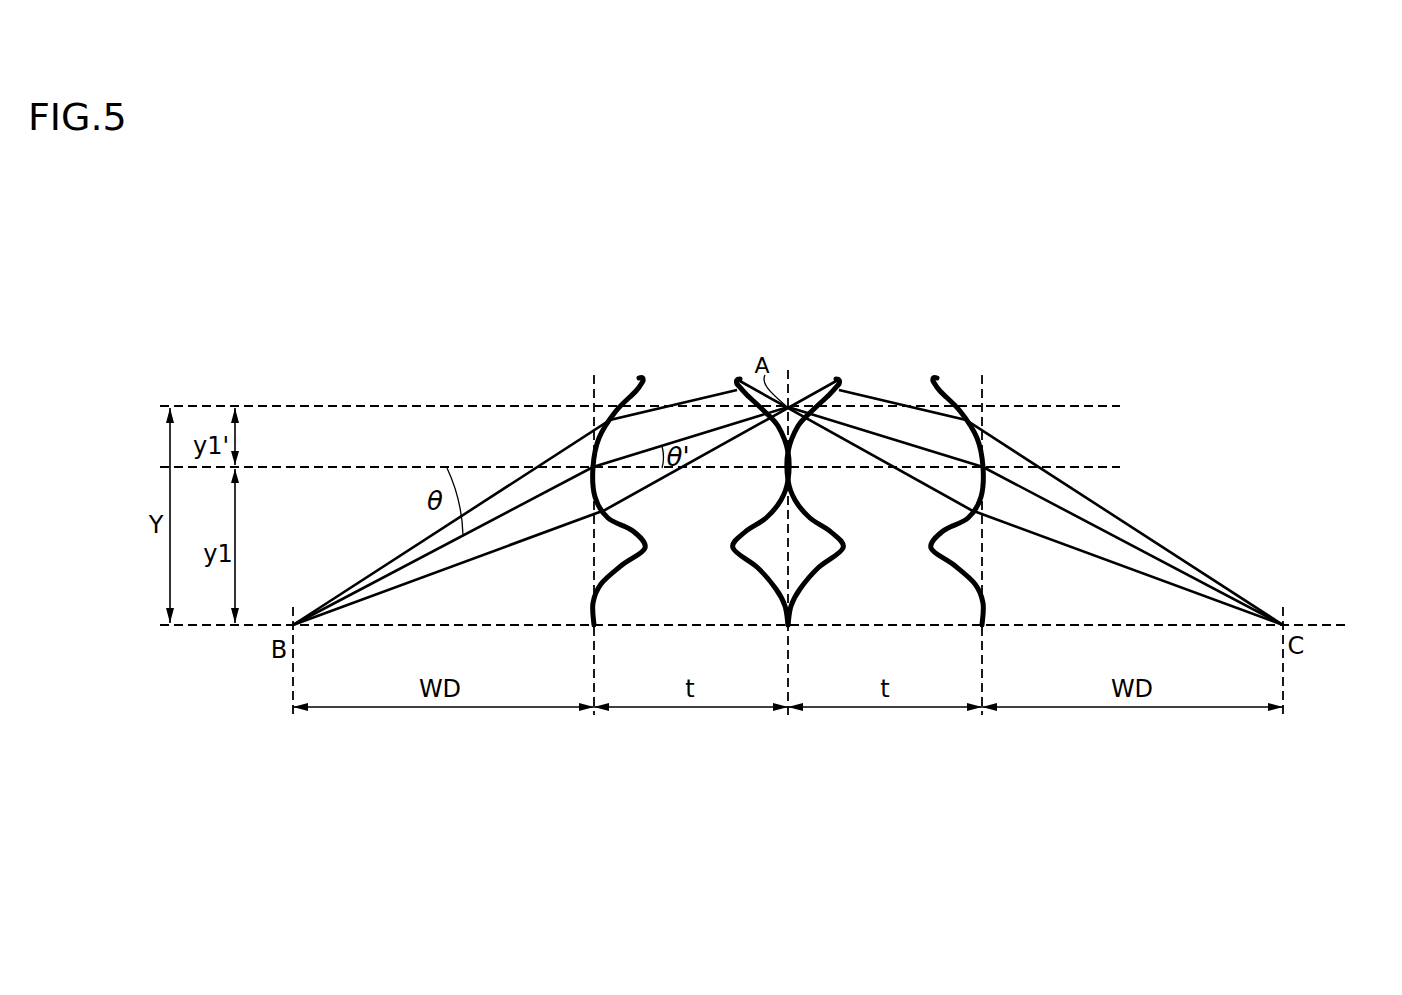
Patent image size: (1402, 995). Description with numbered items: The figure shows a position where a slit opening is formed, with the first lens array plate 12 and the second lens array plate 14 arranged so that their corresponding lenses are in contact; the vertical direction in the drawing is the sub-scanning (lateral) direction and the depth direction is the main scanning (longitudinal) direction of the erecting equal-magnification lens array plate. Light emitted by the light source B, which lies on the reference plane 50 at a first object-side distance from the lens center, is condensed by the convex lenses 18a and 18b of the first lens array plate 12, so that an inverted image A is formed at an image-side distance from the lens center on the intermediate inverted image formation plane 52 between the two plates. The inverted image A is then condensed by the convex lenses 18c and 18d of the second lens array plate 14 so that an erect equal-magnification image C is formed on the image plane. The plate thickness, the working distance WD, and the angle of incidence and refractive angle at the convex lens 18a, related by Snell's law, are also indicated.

The first lens array plate 12 is at (688, 495).
The second lens array plate 14 is at (886, 495).
The convex lens 18a is at (638, 387).
The convex lens 18b is at (740, 383).
The convex lens 18c is at (836, 384).
The convex lens 18d is at (935, 386).
The reference plane 50 is at (1337, 620).
The inverted image formation plane 52 is at (788, 396).